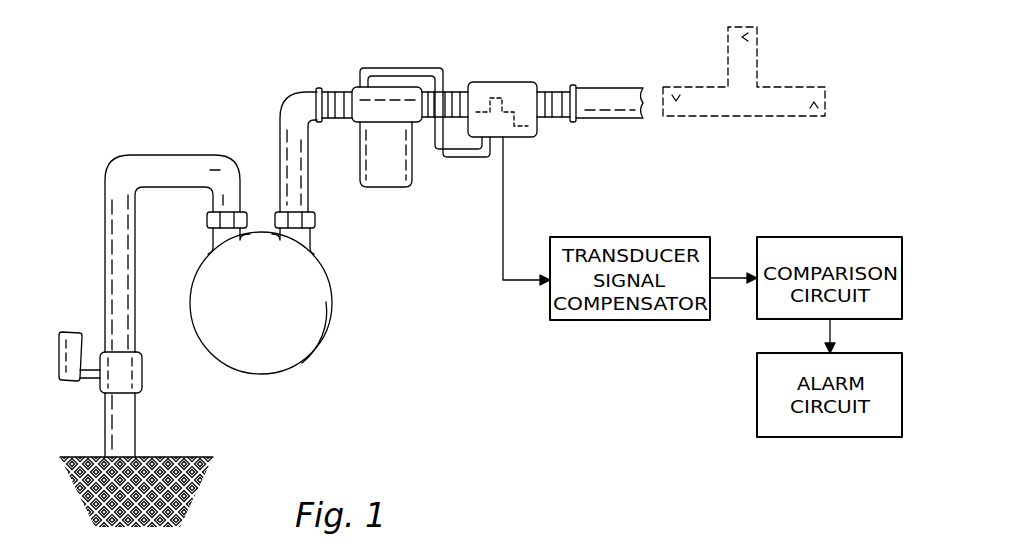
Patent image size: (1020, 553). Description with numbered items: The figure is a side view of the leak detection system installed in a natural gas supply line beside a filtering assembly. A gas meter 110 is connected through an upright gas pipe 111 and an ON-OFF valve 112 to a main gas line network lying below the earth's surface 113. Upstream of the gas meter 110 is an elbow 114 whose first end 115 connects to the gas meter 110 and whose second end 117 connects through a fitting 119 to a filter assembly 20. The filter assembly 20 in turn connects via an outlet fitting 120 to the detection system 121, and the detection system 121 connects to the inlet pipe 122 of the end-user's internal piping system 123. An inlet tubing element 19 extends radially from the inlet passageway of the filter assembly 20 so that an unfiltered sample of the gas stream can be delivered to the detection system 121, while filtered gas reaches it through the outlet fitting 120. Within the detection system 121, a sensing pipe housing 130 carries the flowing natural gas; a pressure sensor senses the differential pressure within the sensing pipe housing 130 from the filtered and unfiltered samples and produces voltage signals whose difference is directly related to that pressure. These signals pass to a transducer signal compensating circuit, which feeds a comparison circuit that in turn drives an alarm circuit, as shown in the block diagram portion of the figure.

The inlet tubing element 19 is at (463, 158).
The filter assembly 20 is at (398, 93).
The gas meter 110 is at (316, 349).
The upright gas pipe 111 is at (107, 263).
The ON-OFF valve 112 is at (80, 383).
The earth's surface 113 is at (183, 456).
The elbow 114 is at (292, 97).
The first end 115 is at (318, 216).
The second end 117 is at (318, 87).
The fitting 119 is at (337, 92).
The outlet fitting 120 is at (452, 92).
The detection system 121 is at (513, 278).
The inlet pipe 122 is at (548, 118).
The internal piping system 123 is at (758, 86).
The sensing pipe housing 130 is at (492, 90).